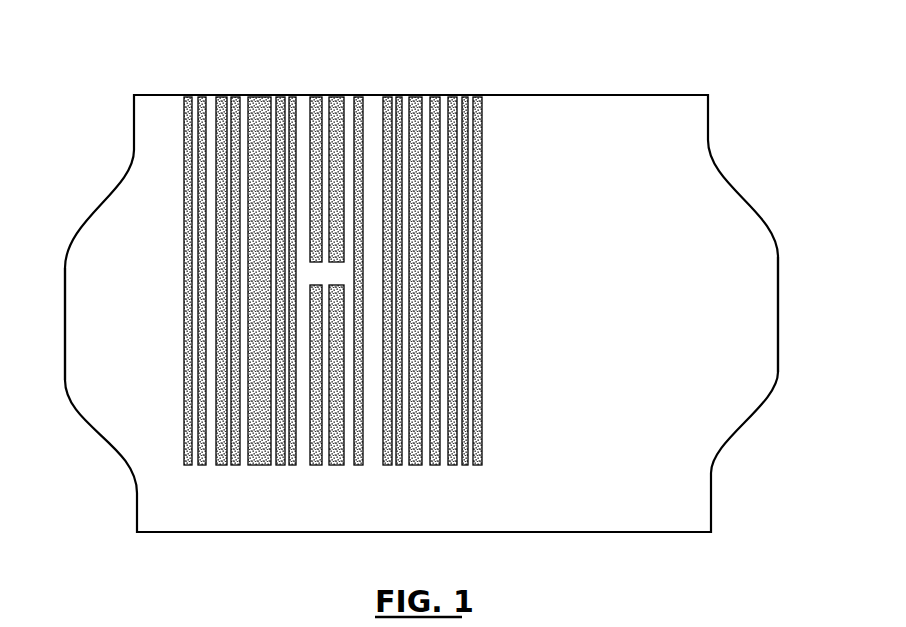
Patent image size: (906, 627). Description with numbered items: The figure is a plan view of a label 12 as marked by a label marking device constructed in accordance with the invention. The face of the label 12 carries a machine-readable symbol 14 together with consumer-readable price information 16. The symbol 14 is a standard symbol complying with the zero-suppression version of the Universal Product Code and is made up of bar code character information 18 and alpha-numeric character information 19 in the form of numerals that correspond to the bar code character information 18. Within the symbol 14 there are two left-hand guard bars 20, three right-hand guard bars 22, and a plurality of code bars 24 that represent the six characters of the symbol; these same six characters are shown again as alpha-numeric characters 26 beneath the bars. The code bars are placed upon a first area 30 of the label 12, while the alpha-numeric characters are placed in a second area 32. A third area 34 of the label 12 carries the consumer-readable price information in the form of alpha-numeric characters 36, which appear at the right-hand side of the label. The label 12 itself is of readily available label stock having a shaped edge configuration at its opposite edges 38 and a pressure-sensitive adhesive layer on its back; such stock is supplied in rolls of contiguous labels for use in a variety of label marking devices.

The label 12 is at (550, 95).
The machine-readable symbol 14 is at (321, 258).
The consumer-readable price information 16 is at (651, 289).
The bar code character information 18 is at (221, 283).
The alpha-numeric character information 19 is at (218, 502).
The left-hand guard bars 20 is at (188, 95).
The right-hand guard bars 22 is at (454, 95).
The code bars 24 is at (416, 95).
The alpha-numeric characters 26 is at (306, 515).
The first area 30 is at (340, 282).
The second area 32 is at (404, 500).
The third area 34 is at (638, 340).
The alpha-numeric characters 36 is at (651, 307).
The opposite edges 38 is at (65, 292).